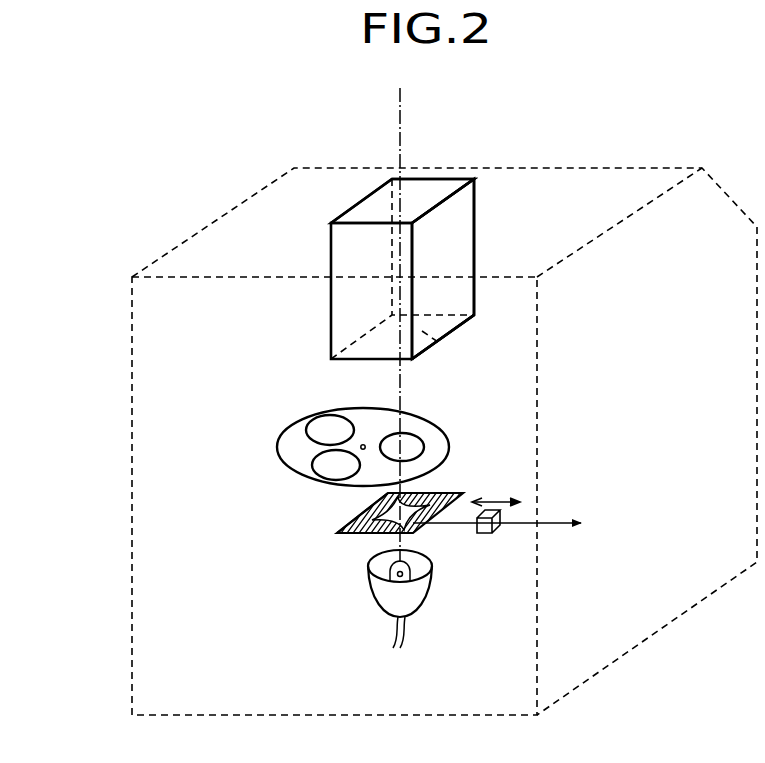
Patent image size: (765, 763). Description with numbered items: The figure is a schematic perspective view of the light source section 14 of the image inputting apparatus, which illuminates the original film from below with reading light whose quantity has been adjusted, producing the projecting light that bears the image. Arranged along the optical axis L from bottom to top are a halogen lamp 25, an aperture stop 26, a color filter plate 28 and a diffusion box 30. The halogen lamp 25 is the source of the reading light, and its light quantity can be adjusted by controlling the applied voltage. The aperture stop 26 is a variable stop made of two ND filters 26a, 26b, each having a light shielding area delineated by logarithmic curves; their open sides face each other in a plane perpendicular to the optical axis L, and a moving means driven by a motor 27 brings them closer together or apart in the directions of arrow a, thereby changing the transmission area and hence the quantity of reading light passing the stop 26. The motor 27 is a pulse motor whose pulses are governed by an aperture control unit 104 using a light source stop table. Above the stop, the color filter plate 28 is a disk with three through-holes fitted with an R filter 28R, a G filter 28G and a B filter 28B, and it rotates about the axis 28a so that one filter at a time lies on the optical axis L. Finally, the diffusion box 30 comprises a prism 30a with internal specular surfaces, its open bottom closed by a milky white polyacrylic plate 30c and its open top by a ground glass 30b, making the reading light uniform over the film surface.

The light source section 14 is at (131, 528).
The halogen lamp 25 is at (385, 598).
The aperture stop 26 is at (381, 559).
The ND filter 26a is at (413, 533).
The ND filter 26b is at (350, 519).
The motor 27 is at (493, 536).
The color filter plate 28 is at (347, 452).
The R (red) filter 28R is at (327, 424).
The G (green) filter 28G is at (413, 446).
The B (blue) filter 28B is at (330, 463).
The axis 28a is at (367, 445).
The diffusion box 30 is at (482, 243).
The prism 30a is at (464, 240).
The ground glass 30b is at (428, 190).
The milky white polyacrylic plate 30c is at (433, 338).
The aperture control unit 104 is at (522, 525).
The optical axis L is at (400, 128).
The arrows a is at (500, 496).